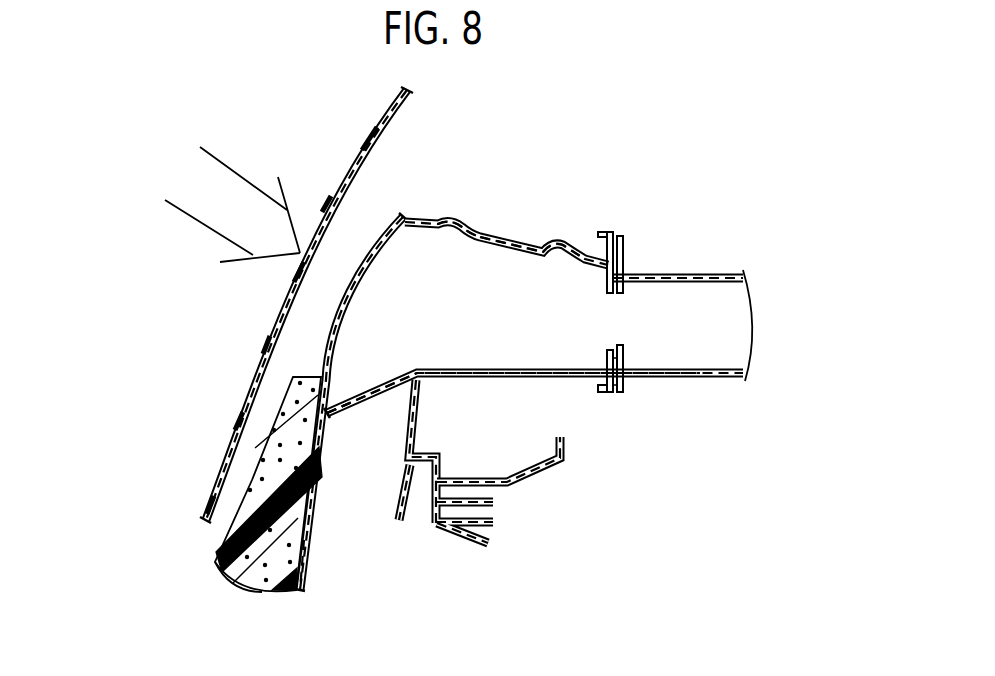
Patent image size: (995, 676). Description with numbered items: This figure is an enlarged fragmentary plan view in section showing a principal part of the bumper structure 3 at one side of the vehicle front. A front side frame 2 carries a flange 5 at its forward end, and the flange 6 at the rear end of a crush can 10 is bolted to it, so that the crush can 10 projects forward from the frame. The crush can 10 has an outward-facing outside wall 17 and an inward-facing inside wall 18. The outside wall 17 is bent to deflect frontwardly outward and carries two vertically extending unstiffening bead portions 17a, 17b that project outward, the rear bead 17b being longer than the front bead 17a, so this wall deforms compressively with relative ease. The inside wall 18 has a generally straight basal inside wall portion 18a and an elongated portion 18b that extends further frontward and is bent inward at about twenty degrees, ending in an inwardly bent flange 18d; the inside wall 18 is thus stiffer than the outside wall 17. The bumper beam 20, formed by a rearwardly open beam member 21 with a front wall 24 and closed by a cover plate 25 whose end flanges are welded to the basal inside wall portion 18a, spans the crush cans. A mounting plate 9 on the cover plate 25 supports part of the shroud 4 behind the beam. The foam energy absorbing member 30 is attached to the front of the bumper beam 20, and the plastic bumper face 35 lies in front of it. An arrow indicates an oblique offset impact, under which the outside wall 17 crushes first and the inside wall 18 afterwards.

The front side frame 2 is at (688, 273).
The bumper structure 3 is at (178, 288).
The shroud 4 is at (533, 472).
The flange 5 is at (616, 395).
The flange 6 is at (600, 392).
The mounting plate 9 is at (420, 410).
The crush can 10 is at (527, 230).
The outside wall 17 is at (502, 230).
The unstiffening bead portion 17a is at (460, 222).
The unstiffening bead portion 17b is at (565, 242).
The inside wall 18 is at (518, 380).
The basal inside wall portion 18a is at (480, 369).
The elongated portion 18b is at (390, 382).
The flange 18d is at (329, 433).
The bumper beam 20 is at (318, 348).
The beam member 21 is at (304, 556).
The front wall 24 is at (297, 496).
The cover plate 25 is at (404, 512).
The energy absorbing member 30 is at (231, 569).
The bumper face 35 is at (359, 155).